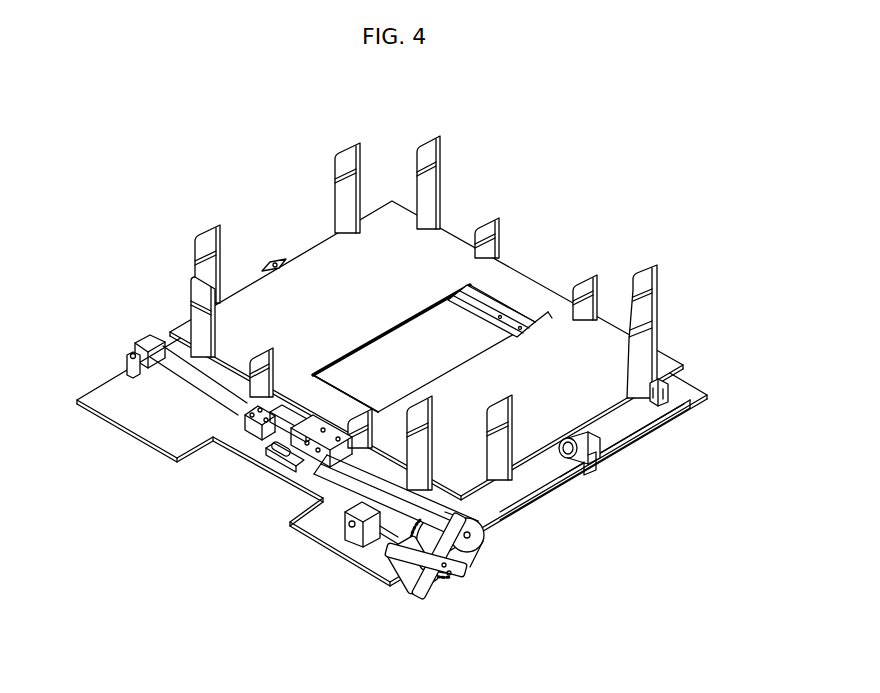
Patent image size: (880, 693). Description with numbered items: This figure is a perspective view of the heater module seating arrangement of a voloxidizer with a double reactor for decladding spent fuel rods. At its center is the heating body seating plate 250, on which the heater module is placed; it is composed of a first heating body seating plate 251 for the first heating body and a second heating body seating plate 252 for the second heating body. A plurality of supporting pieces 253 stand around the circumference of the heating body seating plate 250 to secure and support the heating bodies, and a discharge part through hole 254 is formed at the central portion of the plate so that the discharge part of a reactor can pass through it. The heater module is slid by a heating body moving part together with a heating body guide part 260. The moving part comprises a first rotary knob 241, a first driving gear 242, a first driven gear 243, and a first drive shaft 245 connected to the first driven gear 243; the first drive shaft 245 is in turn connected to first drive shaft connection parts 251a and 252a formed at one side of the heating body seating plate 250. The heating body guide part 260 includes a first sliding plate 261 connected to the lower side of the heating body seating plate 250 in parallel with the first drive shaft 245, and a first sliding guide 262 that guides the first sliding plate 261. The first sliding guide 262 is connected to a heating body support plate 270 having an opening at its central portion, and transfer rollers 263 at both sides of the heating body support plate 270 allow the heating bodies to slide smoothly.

The first rotary knob 241 is at (460, 580).
The first driving gear 242 is at (404, 583).
The first driven gear 243 is at (480, 540).
The first drive shaft 245 is at (360, 477).
The heating body seating plate 250 is at (426, 278).
The first heating body seating plate 251 is at (543, 303).
The first drive shaft connection part 251a is at (280, 453).
The second heating body seating plate 252 is at (498, 275).
The first drive shaft connection part 252a is at (247, 413).
The supporting pieces 253 is at (417, 153).
The discharge part through hole 254 is at (383, 362).
The heating body guide part 260 is at (631, 462).
The first sliding plate 261 is at (640, 417).
The first sliding guide 262 is at (663, 403).
The transfer rollers 263 is at (618, 480).
The heating body support plate 270 is at (107, 393).